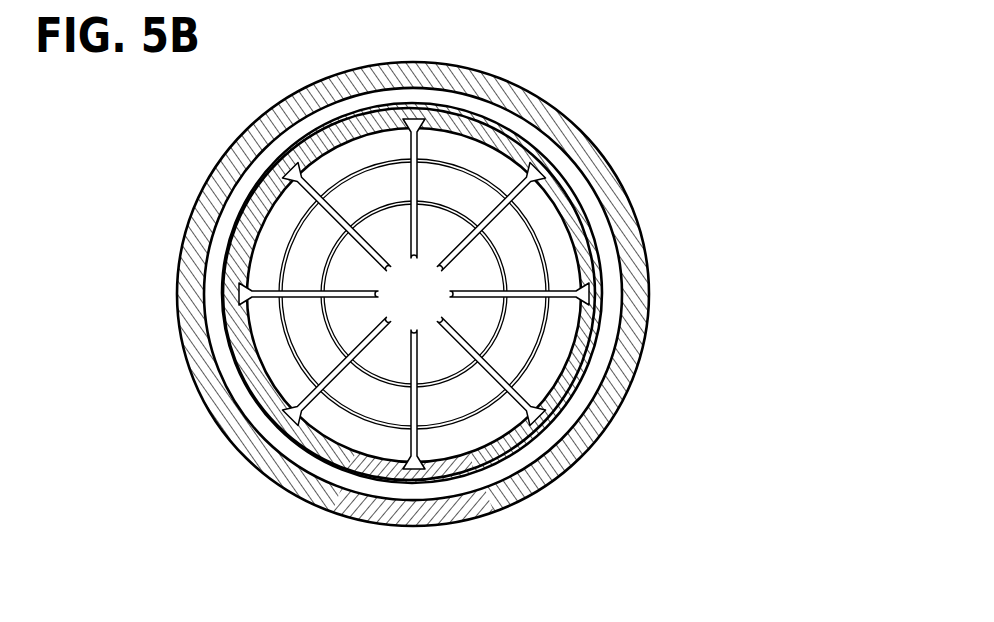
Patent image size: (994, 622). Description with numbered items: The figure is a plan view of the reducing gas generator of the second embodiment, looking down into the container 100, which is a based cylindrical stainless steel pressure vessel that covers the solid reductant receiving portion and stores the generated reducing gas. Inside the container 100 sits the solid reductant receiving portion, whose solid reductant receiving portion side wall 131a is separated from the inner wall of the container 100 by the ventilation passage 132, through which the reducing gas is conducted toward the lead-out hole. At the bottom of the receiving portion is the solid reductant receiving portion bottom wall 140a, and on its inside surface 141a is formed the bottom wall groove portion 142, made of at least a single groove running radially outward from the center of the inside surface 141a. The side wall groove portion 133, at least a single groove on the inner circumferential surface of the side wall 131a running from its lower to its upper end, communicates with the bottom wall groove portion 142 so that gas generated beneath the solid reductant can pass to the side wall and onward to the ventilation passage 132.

The container 100 is at (511, 274).
The solid reductant receiving portion side wall 131a is at (580, 200).
The ventilation passage 132 is at (562, 161).
The side wall groove portion 133 is at (603, 292).
The solid reductant receiving portion bottom wall 140a is at (603, 337).
The inside surface 141a is at (483, 160).
The bottom wall groove portion 142 is at (495, 223).